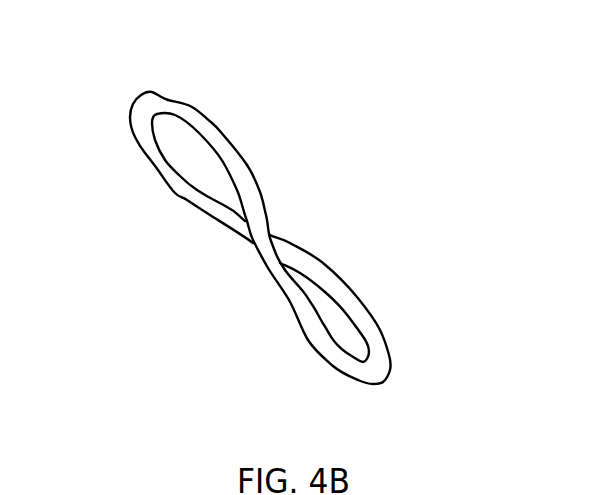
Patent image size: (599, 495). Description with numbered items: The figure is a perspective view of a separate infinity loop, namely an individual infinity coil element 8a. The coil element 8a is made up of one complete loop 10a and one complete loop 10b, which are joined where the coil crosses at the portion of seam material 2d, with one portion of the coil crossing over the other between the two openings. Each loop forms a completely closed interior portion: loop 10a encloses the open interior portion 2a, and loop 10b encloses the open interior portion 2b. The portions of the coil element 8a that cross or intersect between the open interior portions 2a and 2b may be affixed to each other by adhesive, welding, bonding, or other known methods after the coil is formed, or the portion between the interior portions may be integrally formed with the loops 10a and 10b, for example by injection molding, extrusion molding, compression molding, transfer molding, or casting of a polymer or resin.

The complete loop 10a is at (139, 95).
The open interior portion 2a is at (186, 155).
The open interior portion 2b is at (333, 317).
The portion of seam material 2d is at (272, 228).
The individual infinity coil element 8a is at (184, 267).
The complete loop 10b is at (383, 381).